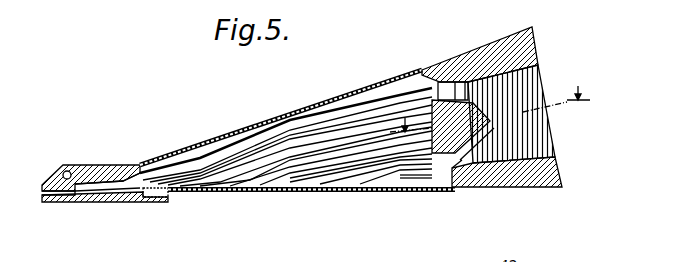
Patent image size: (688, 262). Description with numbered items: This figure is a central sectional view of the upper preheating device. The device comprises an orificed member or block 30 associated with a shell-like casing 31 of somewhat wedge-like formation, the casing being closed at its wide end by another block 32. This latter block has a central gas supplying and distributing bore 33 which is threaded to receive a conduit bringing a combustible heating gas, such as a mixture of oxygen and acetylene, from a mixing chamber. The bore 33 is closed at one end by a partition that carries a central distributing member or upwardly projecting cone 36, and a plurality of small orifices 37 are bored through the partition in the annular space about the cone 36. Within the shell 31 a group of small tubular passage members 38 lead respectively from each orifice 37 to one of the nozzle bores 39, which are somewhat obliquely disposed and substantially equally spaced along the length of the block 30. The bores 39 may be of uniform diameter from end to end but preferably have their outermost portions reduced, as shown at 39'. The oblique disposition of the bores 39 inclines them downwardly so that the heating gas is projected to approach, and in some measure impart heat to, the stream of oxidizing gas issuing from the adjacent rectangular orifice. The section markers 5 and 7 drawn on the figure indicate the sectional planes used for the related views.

The orificed member or block 30 is at (85, 164).
The shell-like casing 31 is at (255, 123).
The block 32 is at (500, 39).
The gas supplying and distributing bore 33 is at (547, 77).
The distributing member or cone 36 is at (548, 106).
The small orifices 37 is at (464, 162).
The tubular passage members 38 is at (352, 176).
The nozzle bores 39 is at (107, 207).
The reduced outermost portions of the bores 39' is at (55, 216).
The section line 5 is at (411, 135).
The section line 7 is at (556, 104).